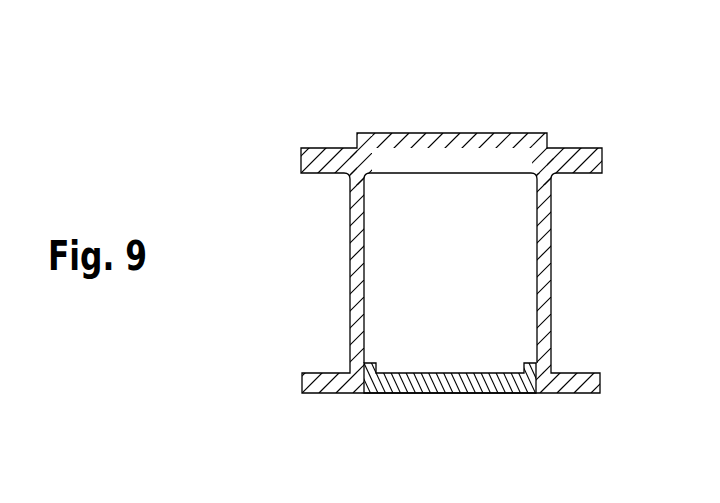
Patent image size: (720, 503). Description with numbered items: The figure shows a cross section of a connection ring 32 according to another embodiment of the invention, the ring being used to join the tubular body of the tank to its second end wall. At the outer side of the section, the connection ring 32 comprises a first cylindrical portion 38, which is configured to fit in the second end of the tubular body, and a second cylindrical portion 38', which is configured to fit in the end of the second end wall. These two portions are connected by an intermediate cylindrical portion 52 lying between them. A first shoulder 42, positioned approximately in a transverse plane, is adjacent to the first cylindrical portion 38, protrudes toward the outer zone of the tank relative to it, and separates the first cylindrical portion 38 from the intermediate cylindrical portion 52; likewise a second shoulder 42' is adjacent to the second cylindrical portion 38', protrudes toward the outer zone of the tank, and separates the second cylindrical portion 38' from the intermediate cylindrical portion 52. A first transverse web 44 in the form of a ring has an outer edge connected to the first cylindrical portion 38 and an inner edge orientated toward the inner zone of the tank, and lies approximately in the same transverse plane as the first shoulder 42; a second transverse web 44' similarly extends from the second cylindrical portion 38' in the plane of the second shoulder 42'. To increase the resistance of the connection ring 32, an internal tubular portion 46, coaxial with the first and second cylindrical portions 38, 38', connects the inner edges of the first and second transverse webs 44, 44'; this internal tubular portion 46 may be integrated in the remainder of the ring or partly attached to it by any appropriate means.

The connection ring 32 is at (383, 245).
The first cylindrical portion 38 is at (383, 230).
The second cylindrical portion 38' is at (383, 231).
The first shoulder 42 is at (383, 235).
The second shoulder 42' is at (383, 234).
The first transverse web 44 is at (383, 263).
The second transverse web 44' is at (383, 263).
The internal tubular portion 46 is at (453, 396).
The intermediate cylindrical portion 52 is at (436, 130).